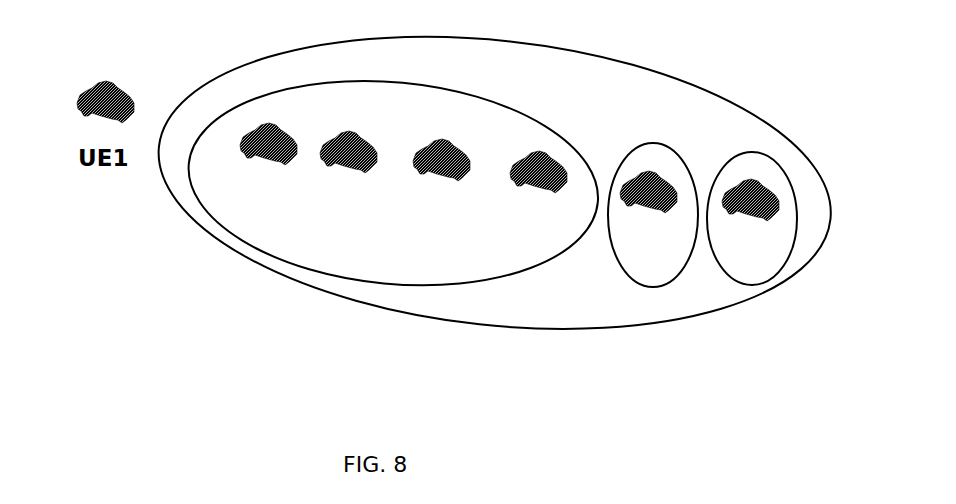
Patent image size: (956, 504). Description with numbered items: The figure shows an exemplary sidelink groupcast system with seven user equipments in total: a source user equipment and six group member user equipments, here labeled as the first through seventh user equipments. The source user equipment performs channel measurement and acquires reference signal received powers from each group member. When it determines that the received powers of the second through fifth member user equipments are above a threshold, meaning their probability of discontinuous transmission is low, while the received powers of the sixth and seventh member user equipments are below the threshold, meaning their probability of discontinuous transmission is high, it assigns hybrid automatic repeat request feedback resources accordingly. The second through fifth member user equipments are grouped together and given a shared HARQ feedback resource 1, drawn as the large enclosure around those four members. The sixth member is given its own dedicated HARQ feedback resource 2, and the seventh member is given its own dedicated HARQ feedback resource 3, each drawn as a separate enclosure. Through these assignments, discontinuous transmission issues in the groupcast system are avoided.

The shared HARQ feedback resource 1 is at (302, 262).
The dedicated HARQ feedback resource 2 is at (642, 284).
The dedicated HARQ feedback resource 3 is at (738, 284).